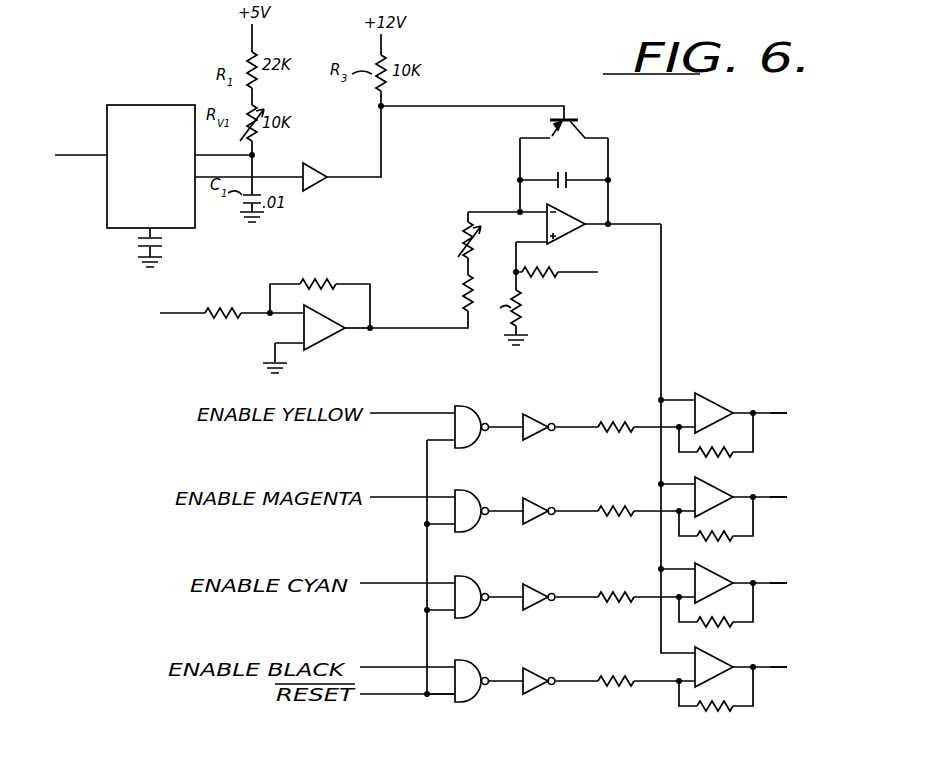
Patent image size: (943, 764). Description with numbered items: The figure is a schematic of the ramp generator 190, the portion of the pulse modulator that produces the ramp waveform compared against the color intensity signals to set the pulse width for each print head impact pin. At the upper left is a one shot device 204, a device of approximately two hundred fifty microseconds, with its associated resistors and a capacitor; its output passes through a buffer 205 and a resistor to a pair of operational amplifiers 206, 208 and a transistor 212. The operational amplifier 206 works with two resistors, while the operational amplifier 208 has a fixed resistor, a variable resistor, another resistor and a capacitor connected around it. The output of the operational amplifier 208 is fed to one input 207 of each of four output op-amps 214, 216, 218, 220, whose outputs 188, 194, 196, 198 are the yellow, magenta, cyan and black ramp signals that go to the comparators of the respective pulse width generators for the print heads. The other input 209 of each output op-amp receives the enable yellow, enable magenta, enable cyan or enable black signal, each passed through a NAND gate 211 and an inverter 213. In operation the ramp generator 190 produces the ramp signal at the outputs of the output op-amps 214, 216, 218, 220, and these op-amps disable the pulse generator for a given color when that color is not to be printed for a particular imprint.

The output 188 is at (770, 413).
The ramp generator 190 is at (683, 185).
The output 194 is at (770, 497).
The output 196 is at (770, 583).
The output 198 is at (770, 667).
The one shot device 204 is at (157, 105).
The buffer 205 is at (318, 191).
The operational amplifier 206 is at (330, 336).
The input 207 is at (678, 396).
The operational amplifier 208 is at (572, 212).
The input 209 is at (676, 431).
The NAND gate 211 is at (459, 416).
The transistor 212 is at (576, 120).
The inverter 213 is at (532, 420).
The output op-amp 214 is at (700, 396).
The output op-amp 216 is at (700, 480).
The output op-amp 218 is at (700, 566).
The output op-amp 220 is at (700, 650).